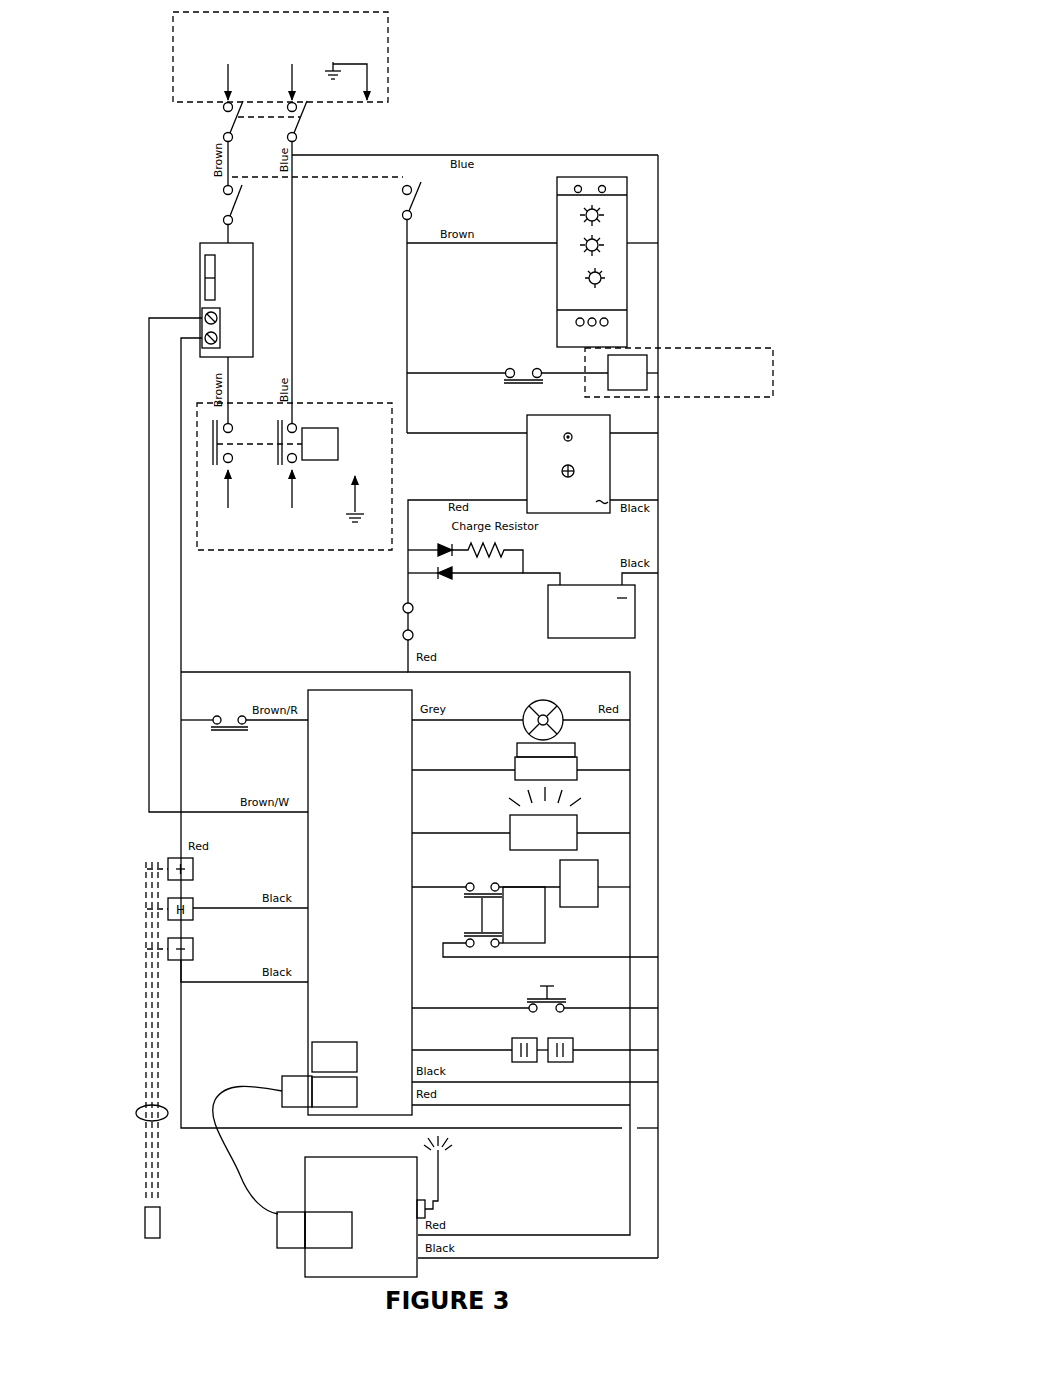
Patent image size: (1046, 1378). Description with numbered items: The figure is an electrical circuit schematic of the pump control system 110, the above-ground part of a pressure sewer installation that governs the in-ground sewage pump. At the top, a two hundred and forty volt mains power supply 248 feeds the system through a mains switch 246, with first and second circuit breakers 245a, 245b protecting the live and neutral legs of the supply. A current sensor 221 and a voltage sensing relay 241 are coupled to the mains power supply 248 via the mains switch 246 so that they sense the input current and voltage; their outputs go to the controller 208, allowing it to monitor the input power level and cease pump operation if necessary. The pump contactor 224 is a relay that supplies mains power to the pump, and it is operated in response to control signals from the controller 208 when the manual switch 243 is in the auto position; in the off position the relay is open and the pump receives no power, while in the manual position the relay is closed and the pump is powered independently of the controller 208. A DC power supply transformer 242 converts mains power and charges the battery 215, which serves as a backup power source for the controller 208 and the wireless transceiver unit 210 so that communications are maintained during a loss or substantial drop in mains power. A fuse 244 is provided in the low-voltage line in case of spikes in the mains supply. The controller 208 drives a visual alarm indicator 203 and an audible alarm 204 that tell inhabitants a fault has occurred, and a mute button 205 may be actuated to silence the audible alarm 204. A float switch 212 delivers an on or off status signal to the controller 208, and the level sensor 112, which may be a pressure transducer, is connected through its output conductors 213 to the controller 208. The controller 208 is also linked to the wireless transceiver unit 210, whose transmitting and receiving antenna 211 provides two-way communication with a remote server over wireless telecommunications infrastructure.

The pump control system 110 is at (744, 128).
The mains power supply 248 is at (173, 40).
The mains switch 246 is at (214, 117).
The first circuit breaker 245a is at (215, 207).
The second circuit breaker 245b is at (392, 213).
The voltage sensing relay 241 is at (617, 180).
The current sensor 221 is at (200, 302).
The pump contactor 224 is at (197, 485).
The DC power supply transformer 242 is at (608, 465).
The battery 215 is at (636, 627).
The fuse 244 is at (388, 610).
The controller 208 is at (340, 865).
The visual alarm indicator 203 is at (575, 752).
The audible alarm 204 is at (577, 820).
The manual switch 243 is at (556, 922).
The mute button 205 is at (598, 992).
The float switch 212 is at (592, 1058).
The output conductors 213 is at (136, 1112).
The level sensor 112 is at (143, 1228).
The antenna 211 is at (440, 1180).
The wireless transceiver unit 210 is at (328, 1268).